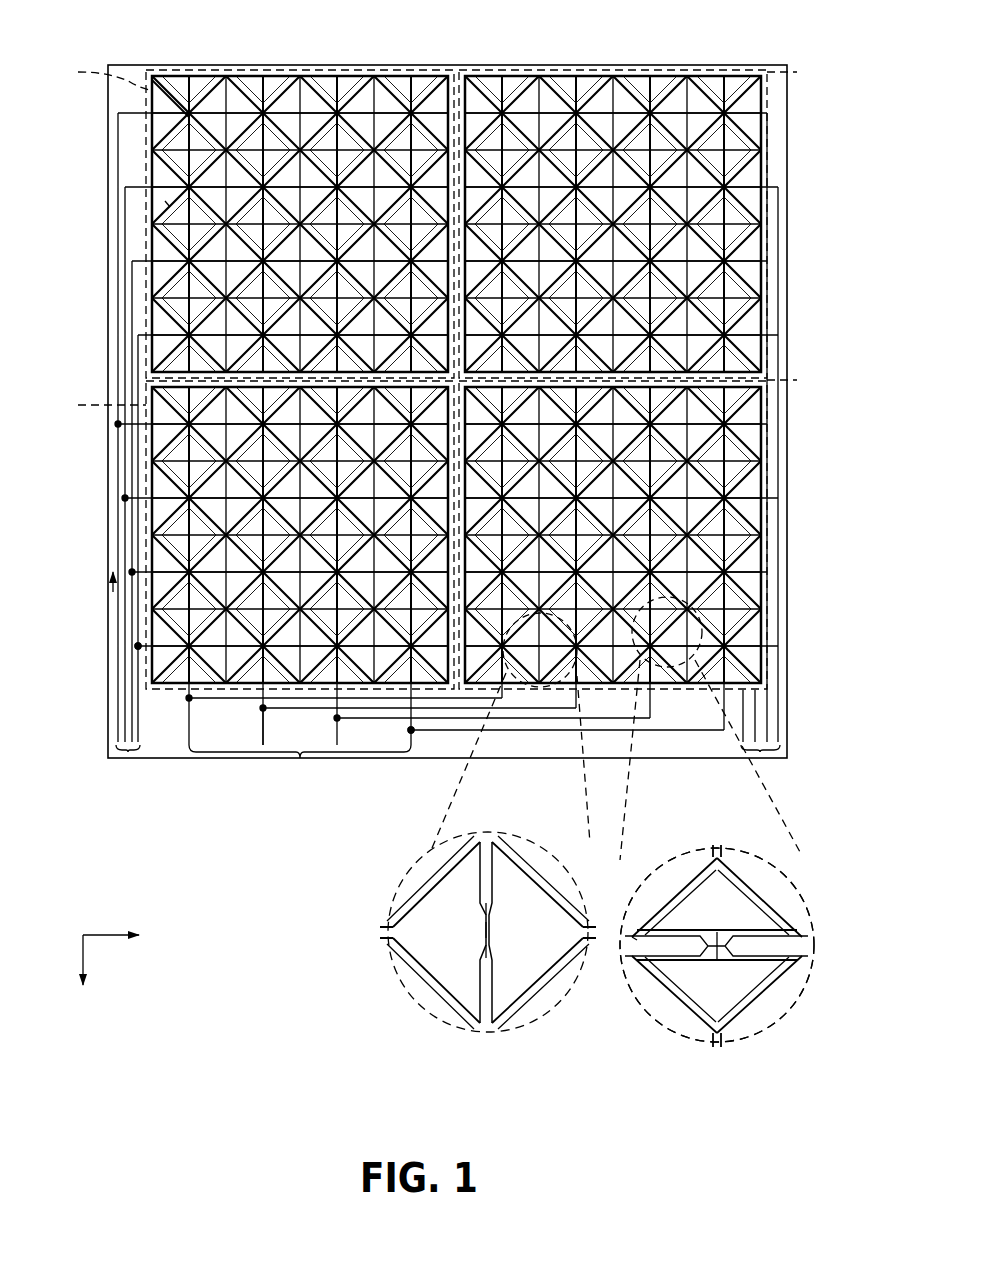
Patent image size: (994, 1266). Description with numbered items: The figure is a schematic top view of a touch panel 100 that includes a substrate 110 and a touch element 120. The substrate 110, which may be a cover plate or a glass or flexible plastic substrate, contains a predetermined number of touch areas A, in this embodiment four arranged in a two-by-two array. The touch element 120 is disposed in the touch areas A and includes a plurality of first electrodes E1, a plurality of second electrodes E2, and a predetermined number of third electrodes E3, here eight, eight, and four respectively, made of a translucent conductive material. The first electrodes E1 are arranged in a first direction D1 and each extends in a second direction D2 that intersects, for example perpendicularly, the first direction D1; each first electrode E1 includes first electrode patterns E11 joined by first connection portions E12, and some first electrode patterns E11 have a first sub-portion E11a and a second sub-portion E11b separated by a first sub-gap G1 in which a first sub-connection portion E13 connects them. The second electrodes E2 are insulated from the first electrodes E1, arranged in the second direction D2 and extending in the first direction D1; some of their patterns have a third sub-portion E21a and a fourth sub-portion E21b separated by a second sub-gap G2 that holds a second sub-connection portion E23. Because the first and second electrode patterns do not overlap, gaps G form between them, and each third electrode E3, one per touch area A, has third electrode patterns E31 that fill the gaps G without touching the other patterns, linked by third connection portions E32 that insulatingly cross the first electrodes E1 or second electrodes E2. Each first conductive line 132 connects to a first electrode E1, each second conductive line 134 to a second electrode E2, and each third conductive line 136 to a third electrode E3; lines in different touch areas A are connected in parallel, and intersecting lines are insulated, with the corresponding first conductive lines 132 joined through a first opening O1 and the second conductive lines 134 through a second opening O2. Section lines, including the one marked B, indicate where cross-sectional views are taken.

The touch panel 100 is at (680, 1166).
The substrate 110 is at (124, 68).
The touch element 120 is at (203, 1138).
The first conductive lines 132 is at (138, 245).
The second conductive lines 134 is at (300, 758).
The third conductive lines 136 is at (762, 752).
The first opening O1 is at (140, 645).
The second opening O2 is at (413, 733).
The touch areas A is at (438, 338).
The section line B is at (265, 745).
The first direction D1 is at (134, 979).
The second direction D2 is at (203, 937).
The first electrodes E1 is at (760, 106).
The second electrodes E2 is at (188, 82).
The third electrodes E3 is at (156, 83).
The first electrode patterns E11 is at (160, 103).
The first connection portions E12 is at (188, 118).
The first sub-connection portions E13 is at (486, 950).
The first sub-portion E11a is at (450, 975).
The second sub-portion E11b is at (530, 975).
The third sub-portion E21a is at (735, 900).
The fourth sub-portion E21b is at (740, 990).
The second sub-connection portions E23 is at (705, 935).
The third electrode patterns E31 is at (486, 958).
The third connection portions E32 is at (486, 908).
The gap G is at (165, 203).
The first sub-gap G1 is at (496, 890).
The second sub-gap G2 is at (645, 940).